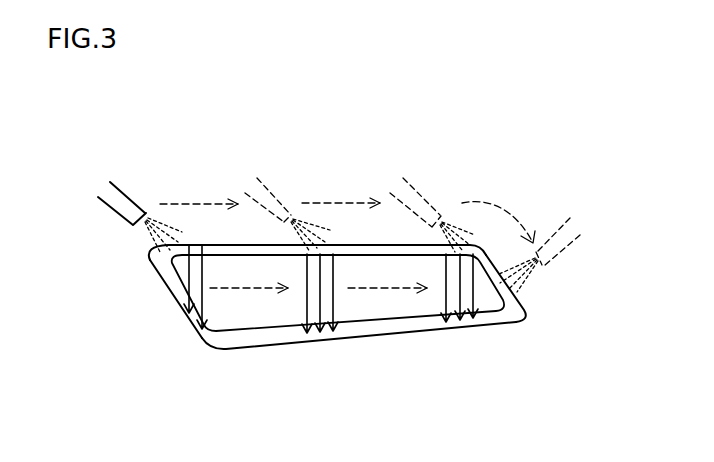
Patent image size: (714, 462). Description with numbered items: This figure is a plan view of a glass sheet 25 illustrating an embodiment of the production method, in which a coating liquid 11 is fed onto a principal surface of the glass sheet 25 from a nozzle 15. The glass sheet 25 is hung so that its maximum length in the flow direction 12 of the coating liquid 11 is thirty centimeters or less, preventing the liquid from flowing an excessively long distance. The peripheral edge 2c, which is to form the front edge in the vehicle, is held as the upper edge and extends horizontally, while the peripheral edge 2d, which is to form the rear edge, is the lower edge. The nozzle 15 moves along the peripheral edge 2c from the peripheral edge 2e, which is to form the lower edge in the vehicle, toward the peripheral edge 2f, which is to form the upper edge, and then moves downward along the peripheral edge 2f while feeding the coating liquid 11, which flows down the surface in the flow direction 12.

The nozzle 15 is at (122, 205).
The coating liquid 11 is at (316, 226).
The peripheral edge 2c is at (273, 244).
The peripheral edge 2d is at (290, 343).
The peripheral edge 2e is at (170, 292).
The peripheral edge 2f is at (523, 300).
The glass sheet 25 is at (252, 315).
The flow direction 12 is at (447, 290).